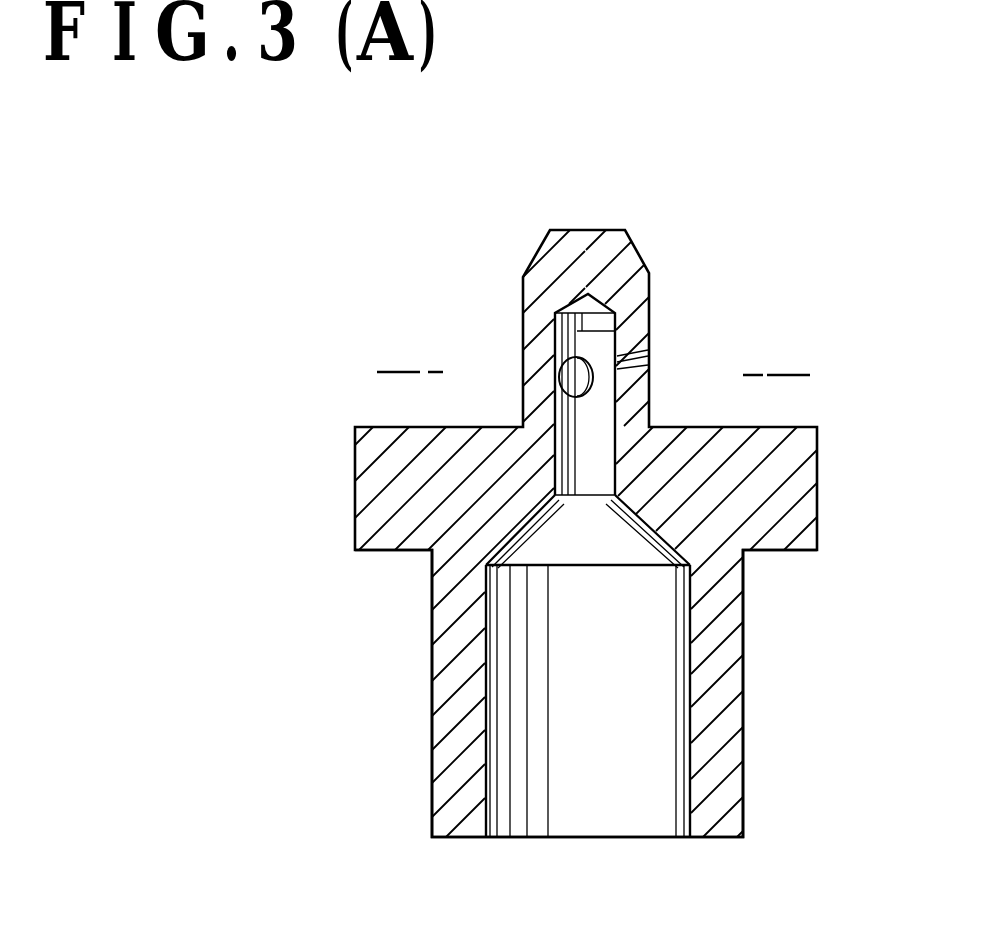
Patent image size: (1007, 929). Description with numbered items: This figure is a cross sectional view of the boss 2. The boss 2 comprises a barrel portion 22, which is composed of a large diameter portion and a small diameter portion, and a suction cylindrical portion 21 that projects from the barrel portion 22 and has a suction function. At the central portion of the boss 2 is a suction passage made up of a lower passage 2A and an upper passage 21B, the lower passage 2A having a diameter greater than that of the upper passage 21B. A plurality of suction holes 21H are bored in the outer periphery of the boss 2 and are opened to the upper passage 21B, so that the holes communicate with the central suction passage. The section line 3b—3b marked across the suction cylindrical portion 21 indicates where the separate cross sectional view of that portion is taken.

The boss 2 is at (648, 228).
The lower passage 2A is at (525, 823).
The suction cylindrical portion 21 is at (640, 285).
The upper passage 21B is at (555, 322).
The suction holes 21H is at (618, 397).
The barrel portion 22 is at (766, 606).
The section line 3b— 3b is at (797, 362).